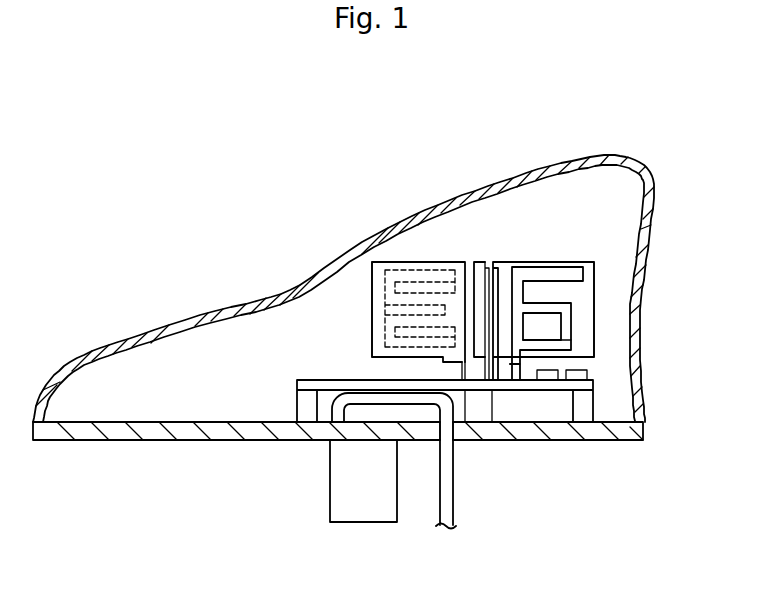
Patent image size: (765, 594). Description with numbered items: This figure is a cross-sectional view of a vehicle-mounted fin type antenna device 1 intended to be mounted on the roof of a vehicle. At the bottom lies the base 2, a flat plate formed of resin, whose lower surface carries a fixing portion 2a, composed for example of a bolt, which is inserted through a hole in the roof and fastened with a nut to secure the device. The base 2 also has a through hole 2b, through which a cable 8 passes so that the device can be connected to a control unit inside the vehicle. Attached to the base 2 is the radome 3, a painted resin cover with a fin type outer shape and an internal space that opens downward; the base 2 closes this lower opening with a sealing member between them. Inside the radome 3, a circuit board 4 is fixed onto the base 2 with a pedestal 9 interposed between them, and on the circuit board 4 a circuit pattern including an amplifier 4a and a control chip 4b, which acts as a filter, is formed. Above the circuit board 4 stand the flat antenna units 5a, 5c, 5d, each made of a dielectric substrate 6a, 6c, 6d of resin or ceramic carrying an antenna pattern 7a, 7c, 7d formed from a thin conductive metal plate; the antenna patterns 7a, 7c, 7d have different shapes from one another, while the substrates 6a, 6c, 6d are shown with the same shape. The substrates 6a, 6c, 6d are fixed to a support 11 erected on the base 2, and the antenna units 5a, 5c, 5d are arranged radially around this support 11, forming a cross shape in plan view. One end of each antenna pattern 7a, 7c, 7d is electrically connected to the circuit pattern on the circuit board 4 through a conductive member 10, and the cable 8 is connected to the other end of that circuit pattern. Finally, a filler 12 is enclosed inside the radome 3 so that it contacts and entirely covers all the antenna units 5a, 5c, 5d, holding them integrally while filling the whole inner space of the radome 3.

The vehicle-mounted fin type antenna device 1 is at (280, 173).
The base 2 is at (158, 440).
The fixing portion 2a is at (360, 510).
The through hole 2b is at (445, 430).
The radome 3 is at (648, 257).
The circuit board 4 is at (520, 376).
The amplifier 4a is at (547, 372).
The control chip 4b is at (577, 372).
The antenna unit 5a is at (439, 256).
The antenna unit 5c is at (541, 256).
The antenna unit 5d is at (485, 256).
The substrate 6a is at (375, 310).
The substrate 6c is at (585, 293).
The substrate 6d is at (520, 343).
The antenna pattern 7a is at (388, 284).
The antenna pattern 7c is at (567, 277).
The antenna pattern 7d is at (525, 365).
The cable 8 is at (450, 497).
The pedestal 9 is at (300, 405).
The conductive member 10 is at (462, 375).
The support 11 is at (481, 382).
The filler 12 is at (170, 363).